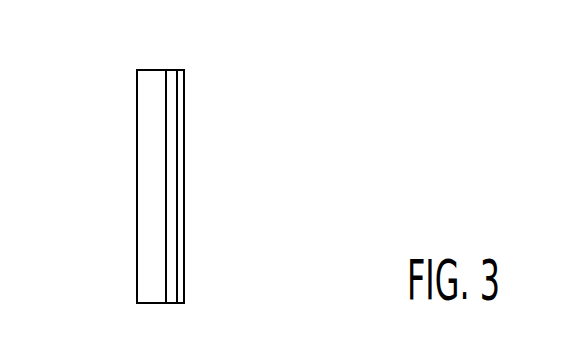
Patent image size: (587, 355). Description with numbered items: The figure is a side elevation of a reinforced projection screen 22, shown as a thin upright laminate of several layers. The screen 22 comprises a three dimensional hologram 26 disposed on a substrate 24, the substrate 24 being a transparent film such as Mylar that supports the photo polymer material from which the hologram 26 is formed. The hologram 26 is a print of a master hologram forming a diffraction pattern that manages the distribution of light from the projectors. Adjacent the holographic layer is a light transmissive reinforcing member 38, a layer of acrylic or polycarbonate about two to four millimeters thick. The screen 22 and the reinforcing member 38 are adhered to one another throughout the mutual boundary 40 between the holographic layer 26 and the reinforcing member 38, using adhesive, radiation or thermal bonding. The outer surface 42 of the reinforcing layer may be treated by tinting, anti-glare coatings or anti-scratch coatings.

The screen 22 is at (250, 96).
The substrate 24 is at (180, 140).
The three dimensional hologram 26 is at (173, 198).
The reinforcing member 38 is at (147, 203).
The mutual boundary 40 is at (166, 83).
The surface 42 is at (136, 132).